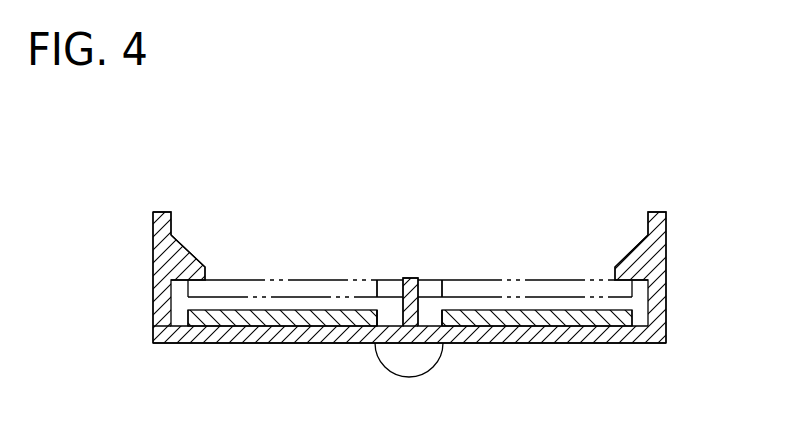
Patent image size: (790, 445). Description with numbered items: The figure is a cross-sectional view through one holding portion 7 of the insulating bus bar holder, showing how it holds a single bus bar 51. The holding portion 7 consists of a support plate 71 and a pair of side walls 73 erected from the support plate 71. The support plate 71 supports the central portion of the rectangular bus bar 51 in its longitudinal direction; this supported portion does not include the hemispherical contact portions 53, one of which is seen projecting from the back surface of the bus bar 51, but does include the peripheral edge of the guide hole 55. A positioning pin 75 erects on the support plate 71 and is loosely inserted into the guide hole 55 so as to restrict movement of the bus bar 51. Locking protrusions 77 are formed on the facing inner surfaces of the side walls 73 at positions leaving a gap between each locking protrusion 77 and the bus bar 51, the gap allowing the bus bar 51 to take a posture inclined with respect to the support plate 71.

The holding portion 7 is at (621, 373).
The bus bar 51 is at (312, 315).
The contact portion 53 is at (395, 362).
The guide hole 55 is at (427, 320).
The support plate 71 is at (262, 336).
The side wall 73 is at (153, 278).
The positioning pin 75 is at (416, 297).
The locking protrusion 77 is at (180, 257).